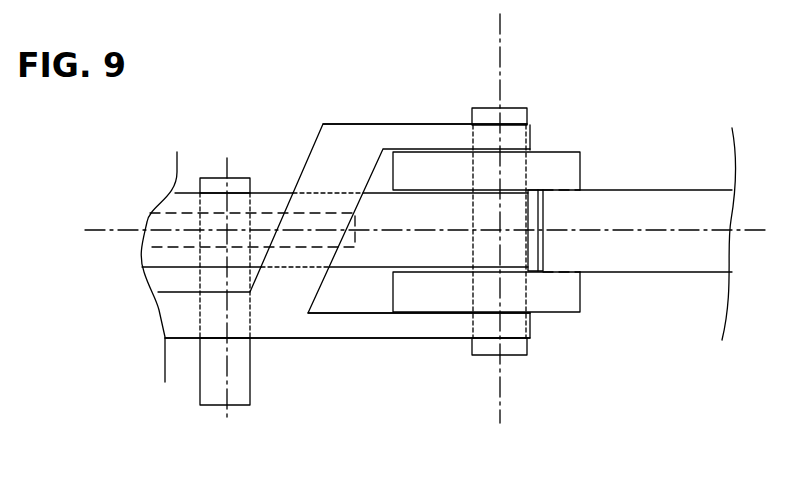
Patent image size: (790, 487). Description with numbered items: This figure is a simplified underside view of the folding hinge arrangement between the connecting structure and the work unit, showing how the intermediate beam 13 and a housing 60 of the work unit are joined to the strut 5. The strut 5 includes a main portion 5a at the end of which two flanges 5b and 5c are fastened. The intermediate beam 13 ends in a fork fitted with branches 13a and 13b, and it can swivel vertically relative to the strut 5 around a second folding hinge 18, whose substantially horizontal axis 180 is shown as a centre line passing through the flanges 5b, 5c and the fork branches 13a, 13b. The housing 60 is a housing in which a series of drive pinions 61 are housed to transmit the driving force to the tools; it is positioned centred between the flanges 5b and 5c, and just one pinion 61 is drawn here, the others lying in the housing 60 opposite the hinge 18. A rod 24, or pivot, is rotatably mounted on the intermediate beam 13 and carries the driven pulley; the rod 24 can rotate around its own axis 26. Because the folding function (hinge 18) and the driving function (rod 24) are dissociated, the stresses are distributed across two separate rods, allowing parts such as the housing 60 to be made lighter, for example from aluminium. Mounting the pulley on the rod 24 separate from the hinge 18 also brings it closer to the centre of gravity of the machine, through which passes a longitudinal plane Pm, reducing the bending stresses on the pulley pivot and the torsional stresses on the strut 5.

The strut 5 is at (564, 250).
The main portion 5a is at (640, 267).
The flange 5b is at (446, 183).
The flange 5c is at (446, 305).
The intermediate beam 13 is at (329, 343).
The branch 13a is at (420, 128).
The branch 13b is at (422, 327).
The second folding hinge 18 is at (475, 218).
The axis 180 is at (500, 110).
The rod 24 is at (252, 352).
The axis 26 is at (227, 413).
The housing 60 is at (396, 262).
The drive pinion 61 is at (252, 213).
The longitudinal plane Pm is at (667, 228).